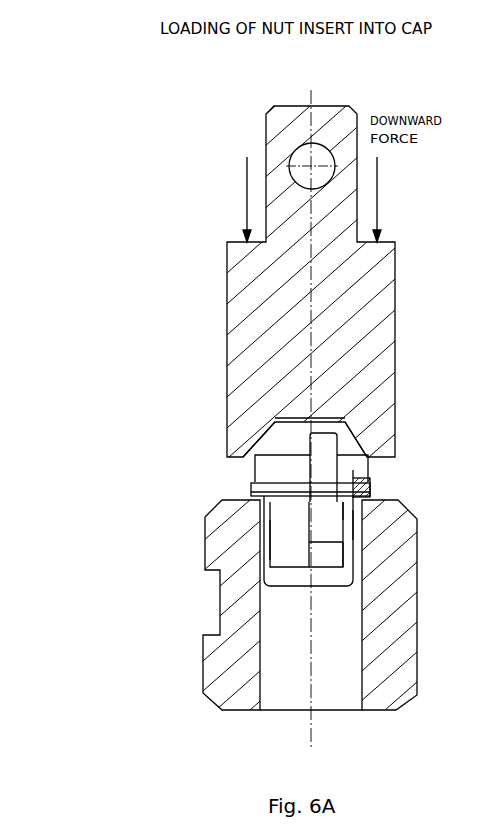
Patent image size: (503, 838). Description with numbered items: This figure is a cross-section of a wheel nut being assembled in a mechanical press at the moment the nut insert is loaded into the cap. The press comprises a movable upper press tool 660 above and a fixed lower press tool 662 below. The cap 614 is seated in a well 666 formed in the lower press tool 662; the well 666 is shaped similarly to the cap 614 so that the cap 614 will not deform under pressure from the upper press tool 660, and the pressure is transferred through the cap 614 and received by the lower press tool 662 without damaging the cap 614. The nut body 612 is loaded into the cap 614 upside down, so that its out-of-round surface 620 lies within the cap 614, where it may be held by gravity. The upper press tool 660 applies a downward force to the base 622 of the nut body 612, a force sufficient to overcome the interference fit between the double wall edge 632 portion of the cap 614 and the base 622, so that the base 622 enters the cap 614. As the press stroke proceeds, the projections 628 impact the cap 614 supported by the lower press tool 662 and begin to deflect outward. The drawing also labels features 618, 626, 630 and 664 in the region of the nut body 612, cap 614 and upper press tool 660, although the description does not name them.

The nut body 612 is at (270, 466).
The cap 614 is at (253, 493).
The nut insert head 618 is at (272, 435).
The out-of-round surface 620 is at (348, 525).
The base 622 is at (268, 483).
The nut insert flange 626 is at (358, 475).
The projections 628 is at (360, 483).
The cap cavity 630 is at (285, 533).
The double wall edge 632 is at (370, 491).
The upper press tool 660 is at (258, 296).
The lower press tool 662 is at (213, 667).
The upper press tool cavity 664 is at (353, 440).
The well 666 is at (352, 543).